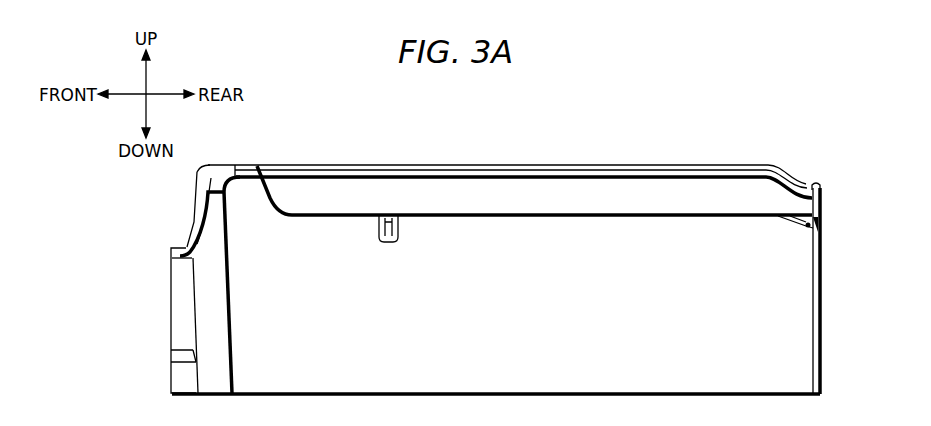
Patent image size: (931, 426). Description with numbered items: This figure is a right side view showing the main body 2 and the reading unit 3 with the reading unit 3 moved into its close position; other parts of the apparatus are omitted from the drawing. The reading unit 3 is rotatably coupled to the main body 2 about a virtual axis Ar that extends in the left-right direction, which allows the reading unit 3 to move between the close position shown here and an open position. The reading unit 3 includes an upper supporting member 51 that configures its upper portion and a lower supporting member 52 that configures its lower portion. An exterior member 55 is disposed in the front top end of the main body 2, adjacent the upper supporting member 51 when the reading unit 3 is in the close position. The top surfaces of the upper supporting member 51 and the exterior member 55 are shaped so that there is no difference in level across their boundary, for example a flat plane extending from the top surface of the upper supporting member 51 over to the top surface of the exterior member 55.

The main body 2 is at (818, 352).
The reading unit 3 is at (821, 190).
The upper supporting member 51 is at (307, 166).
The lower supporting member 52 is at (668, 190).
The exterior member 55 is at (243, 167).
The virtual axis Ar is at (800, 232).